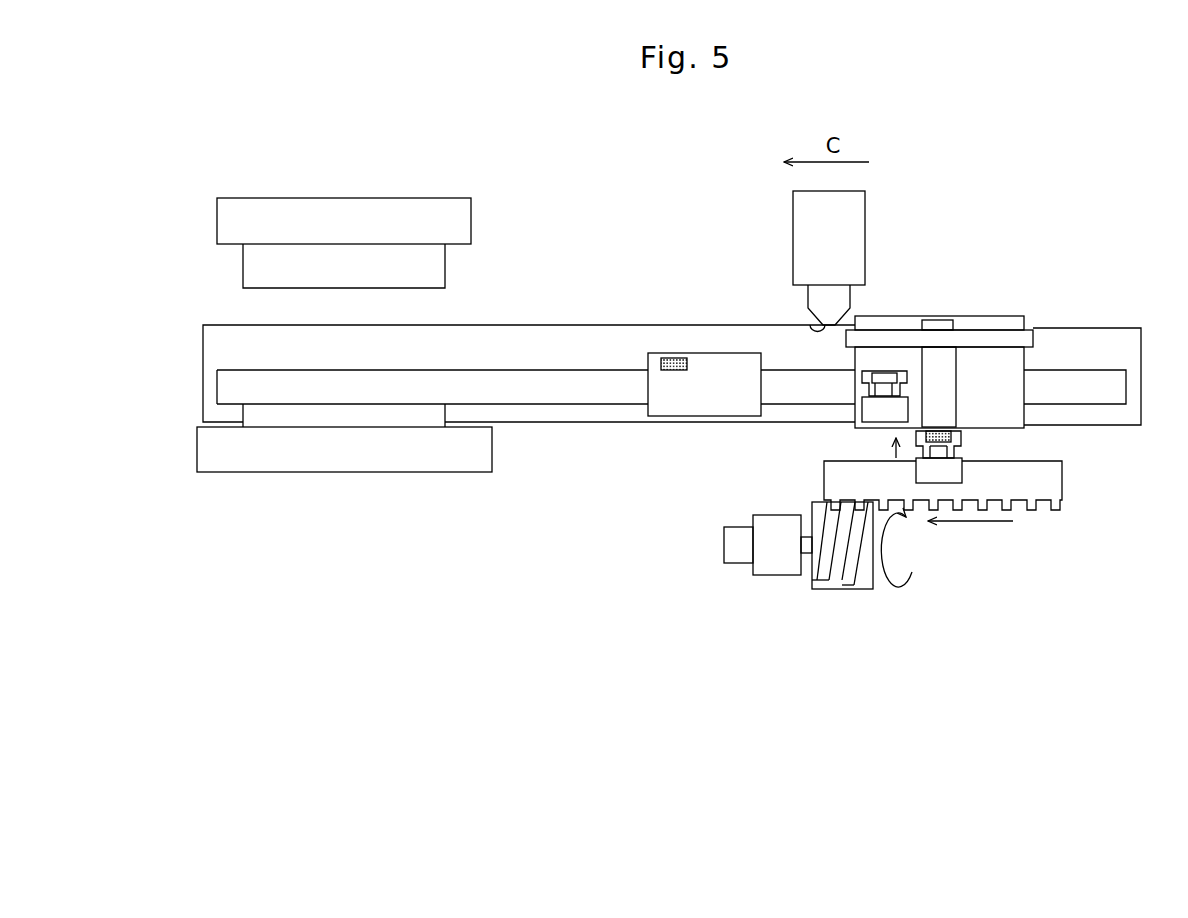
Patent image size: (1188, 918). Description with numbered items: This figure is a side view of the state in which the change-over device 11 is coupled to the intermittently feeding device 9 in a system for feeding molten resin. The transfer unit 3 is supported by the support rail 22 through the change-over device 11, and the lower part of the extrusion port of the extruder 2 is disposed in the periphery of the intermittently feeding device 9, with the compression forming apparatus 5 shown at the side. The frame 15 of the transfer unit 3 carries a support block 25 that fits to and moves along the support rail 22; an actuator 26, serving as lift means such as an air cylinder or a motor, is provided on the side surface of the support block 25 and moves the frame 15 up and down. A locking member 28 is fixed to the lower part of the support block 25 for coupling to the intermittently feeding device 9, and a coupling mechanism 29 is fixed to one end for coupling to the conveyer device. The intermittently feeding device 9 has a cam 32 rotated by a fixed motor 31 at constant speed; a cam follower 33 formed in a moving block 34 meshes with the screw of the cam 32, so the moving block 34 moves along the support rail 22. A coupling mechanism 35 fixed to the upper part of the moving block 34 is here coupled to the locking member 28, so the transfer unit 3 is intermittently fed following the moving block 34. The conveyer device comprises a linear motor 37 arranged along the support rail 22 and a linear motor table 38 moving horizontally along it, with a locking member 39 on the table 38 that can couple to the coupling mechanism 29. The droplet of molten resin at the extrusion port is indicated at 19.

The extruder 2 is at (858, 223).
The transfer unit 3 is at (898, 340).
The compression forming apparatus 5 is at (409, 196).
The intermittently feeding device 9 is at (827, 611).
The change-over device 11 is at (976, 313).
The frame 15 is at (1035, 338).
The droplet 19 is at (811, 326).
The support rail 22 is at (1117, 342).
The support block 25 is at (1007, 323).
The actuator 26 is at (944, 386).
The locking member 28 is at (952, 434).
The coupling mechanism 29 is at (870, 413).
The motor 31 is at (770, 568).
The cam 32 is at (862, 580).
The cam follower 33 is at (1033, 512).
The moving block 34 is at (1050, 486).
The coupling mechanism 35 is at (958, 480).
The linear motor 37 is at (560, 336).
The linear motor table 38 is at (676, 420).
The locking member 39 is at (674, 356).